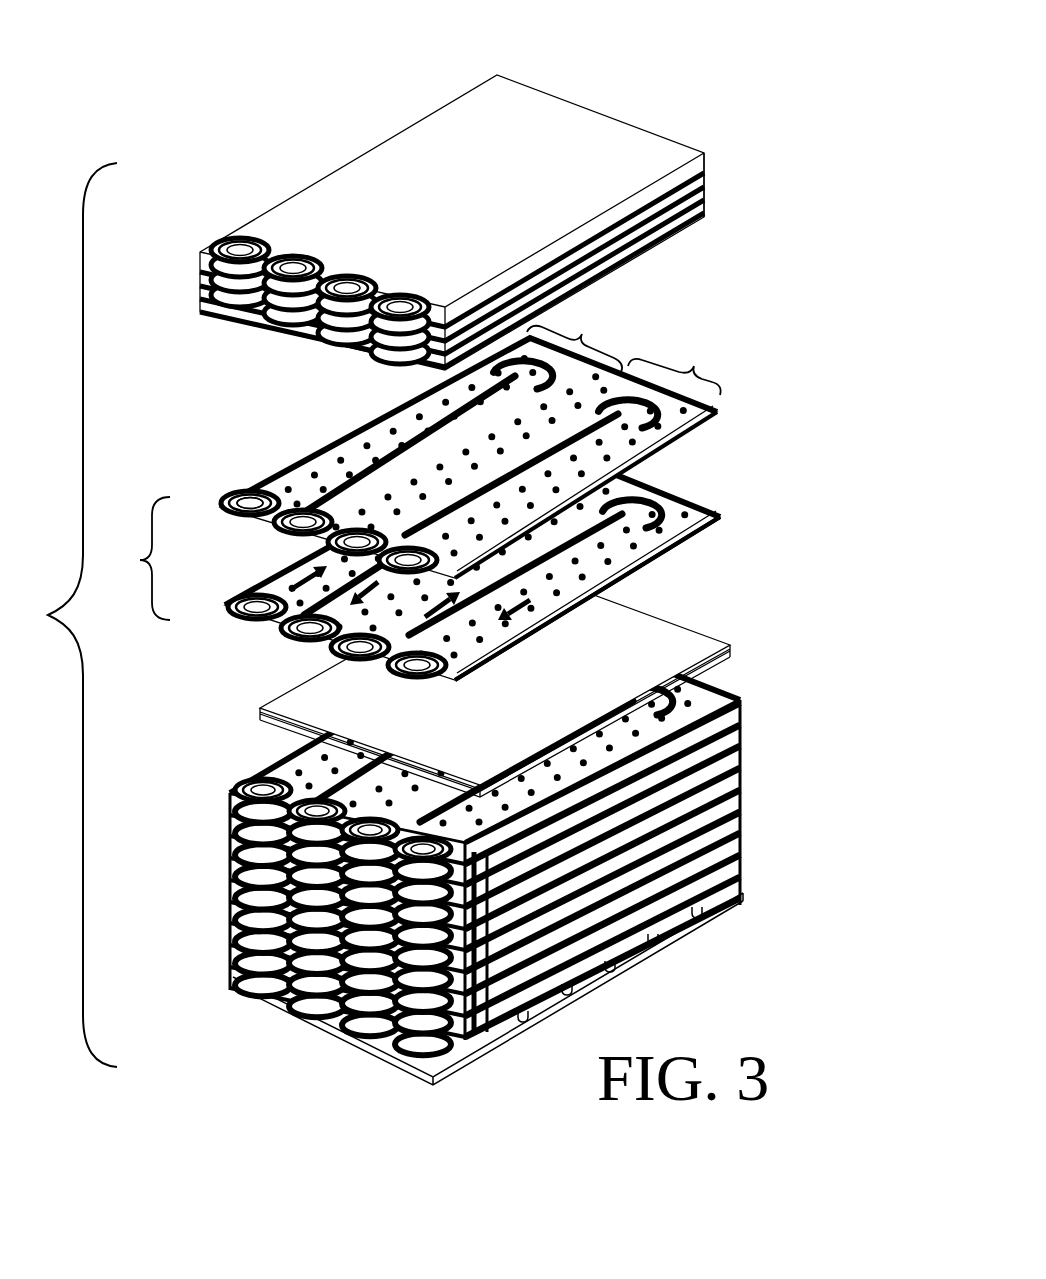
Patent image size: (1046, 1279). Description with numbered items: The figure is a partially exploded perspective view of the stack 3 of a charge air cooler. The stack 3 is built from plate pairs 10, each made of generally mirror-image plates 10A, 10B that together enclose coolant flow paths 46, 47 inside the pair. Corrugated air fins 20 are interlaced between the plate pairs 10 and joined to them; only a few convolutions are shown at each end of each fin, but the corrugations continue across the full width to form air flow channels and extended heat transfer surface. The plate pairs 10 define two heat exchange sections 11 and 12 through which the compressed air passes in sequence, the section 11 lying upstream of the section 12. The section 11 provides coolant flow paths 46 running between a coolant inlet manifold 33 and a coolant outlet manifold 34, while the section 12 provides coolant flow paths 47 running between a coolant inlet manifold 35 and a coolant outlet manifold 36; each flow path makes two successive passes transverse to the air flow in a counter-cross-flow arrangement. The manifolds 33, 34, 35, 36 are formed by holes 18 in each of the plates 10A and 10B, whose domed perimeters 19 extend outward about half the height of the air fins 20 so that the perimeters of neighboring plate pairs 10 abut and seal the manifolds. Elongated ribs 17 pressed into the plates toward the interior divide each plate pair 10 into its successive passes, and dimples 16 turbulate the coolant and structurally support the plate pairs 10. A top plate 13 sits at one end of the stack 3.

The stack 3 is at (791, 261).
The plate pair 10 is at (482, 526).
The plate 10A is at (483, 437).
The plate 10B is at (480, 597).
The heat exchange section 11 is at (674, 364).
The heat exchange section 12 is at (574, 334).
The top plate 13 is at (527, 127).
The dimples 16 is at (640, 540).
The elongated ribs 17 is at (583, 592).
The holes 18 is at (255, 500).
The domed perimeters 19 is at (233, 503).
The corrugated air fins 20 is at (740, 638).
The coolant inlet manifold 33 is at (365, 835).
The coolant outlet manifold 34 is at (433, 827).
The coolant inlet manifold 35 is at (262, 789).
The coolant outlet manifold 36 is at (305, 805).
The coolant flow paths 46 is at (512, 623).
The coolant flow paths 47 is at (298, 575).